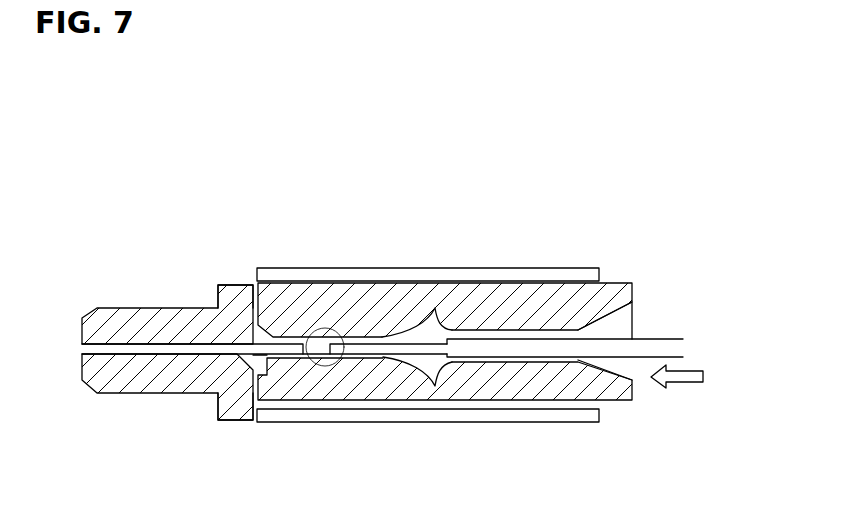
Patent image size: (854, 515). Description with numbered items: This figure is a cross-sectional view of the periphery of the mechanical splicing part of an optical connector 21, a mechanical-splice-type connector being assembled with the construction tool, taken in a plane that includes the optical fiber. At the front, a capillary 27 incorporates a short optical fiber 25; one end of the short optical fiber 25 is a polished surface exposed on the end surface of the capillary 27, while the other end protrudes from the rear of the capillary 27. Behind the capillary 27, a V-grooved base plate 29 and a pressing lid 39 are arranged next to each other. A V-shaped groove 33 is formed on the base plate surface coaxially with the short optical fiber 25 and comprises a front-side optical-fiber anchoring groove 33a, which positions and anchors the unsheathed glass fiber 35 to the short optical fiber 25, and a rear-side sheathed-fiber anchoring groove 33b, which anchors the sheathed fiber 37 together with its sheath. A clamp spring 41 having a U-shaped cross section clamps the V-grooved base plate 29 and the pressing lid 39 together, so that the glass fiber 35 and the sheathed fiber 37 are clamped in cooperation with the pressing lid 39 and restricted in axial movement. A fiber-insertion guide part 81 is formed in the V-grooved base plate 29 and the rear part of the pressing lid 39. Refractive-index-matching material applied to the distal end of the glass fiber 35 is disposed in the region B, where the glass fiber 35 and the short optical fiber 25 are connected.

The optical connector 21 is at (186, 229).
The short optical fiber 25 is at (262, 346).
The capillary 27 is at (115, 308).
The V-grooved base plate 29 is at (437, 402).
The V-shaped groove 33 is at (578, 152).
The optical-fiber anchoring groove 33a is at (373, 336).
The sheathed-fiber anchoring groove 33b is at (538, 355).
The glass fiber 35 is at (422, 343).
The sheathed fiber 37 is at (663, 338).
The pressing lid 39 is at (357, 298).
The clamp spring 41 is at (589, 268).
The fiber-insertion guide part 81 is at (620, 308).
The region B is at (333, 362).